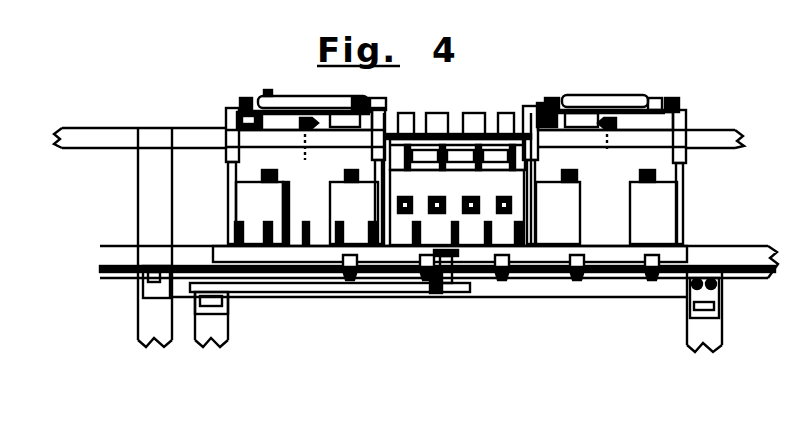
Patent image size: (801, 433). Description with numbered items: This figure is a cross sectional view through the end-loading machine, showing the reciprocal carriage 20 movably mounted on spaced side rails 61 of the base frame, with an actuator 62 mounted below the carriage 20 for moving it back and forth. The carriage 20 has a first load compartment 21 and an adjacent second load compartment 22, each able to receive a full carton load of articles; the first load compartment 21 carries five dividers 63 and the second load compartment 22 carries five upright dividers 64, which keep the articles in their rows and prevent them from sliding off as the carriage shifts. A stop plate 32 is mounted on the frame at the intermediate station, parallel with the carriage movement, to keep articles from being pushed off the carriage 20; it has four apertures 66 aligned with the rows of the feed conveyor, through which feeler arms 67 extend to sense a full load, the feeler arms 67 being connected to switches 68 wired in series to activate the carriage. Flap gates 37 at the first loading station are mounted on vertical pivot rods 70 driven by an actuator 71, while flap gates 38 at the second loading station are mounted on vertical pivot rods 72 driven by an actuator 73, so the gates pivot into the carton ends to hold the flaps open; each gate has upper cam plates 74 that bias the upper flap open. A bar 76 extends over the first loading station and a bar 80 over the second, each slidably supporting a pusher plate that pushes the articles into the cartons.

The carriage 20 is at (221, 252).
The first load compartment 21 is at (292, 240).
The second load compartment 22 is at (482, 207).
The stop plate 32 is at (466, 189).
The flap gates 37 is at (281, 189).
The flap gates 38 is at (637, 188).
The side rails 61 is at (604, 285).
The actuator 62 is at (340, 285).
The dividers 63 is at (269, 221).
The upright dividers 64 is at (408, 208).
The apertures 66 is at (488, 185).
The feeler arms 67 is at (475, 231).
The switches 68 is at (443, 118).
The vertical pivot rods 70 is at (227, 170).
The actuator 71 is at (298, 102).
The vertical pivot rods 72 is at (533, 168).
The actuator 73 is at (590, 102).
The upper cam plates 74 is at (262, 176).
The bar 76 is at (311, 139).
The bar 80 is at (613, 139).